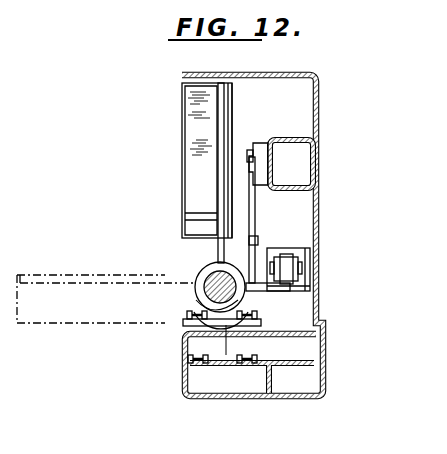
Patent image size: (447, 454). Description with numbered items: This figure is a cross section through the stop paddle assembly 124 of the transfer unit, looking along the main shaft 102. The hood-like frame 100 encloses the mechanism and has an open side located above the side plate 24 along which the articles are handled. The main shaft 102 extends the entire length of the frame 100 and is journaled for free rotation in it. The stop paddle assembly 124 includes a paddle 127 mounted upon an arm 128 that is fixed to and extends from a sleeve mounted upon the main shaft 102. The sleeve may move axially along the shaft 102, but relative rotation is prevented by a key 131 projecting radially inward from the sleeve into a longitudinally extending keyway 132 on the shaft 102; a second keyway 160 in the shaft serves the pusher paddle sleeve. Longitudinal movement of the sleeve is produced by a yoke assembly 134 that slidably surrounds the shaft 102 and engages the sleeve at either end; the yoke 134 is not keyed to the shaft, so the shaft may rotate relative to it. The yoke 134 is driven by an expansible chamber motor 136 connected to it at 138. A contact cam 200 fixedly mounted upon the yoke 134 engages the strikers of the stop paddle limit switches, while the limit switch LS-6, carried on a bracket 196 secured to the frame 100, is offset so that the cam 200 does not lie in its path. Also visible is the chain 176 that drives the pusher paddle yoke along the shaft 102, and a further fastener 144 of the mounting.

The frame 100 is at (319, 101).
The side plate 24 is at (186, 369).
The bracket 196 is at (310, 140).
The limit switch LS-6 is at (254, 143).
The paddle 127 is at (186, 143).
The stop paddle assembly 124 is at (163, 203).
The arm 128 is at (218, 246).
The contact cam 200 is at (249, 262).
The key 131 is at (247, 293).
The expansible chamber motor 136 is at (269, 248).
The connection 138 is at (300, 258).
The keyway 132 is at (201, 273).
The keyway 160 is at (200, 312).
The main shaft 102 is at (252, 319).
The yoke assembly 134 is at (188, 316).
The fastener 144 is at (190, 356).
The chain 176 is at (242, 322).